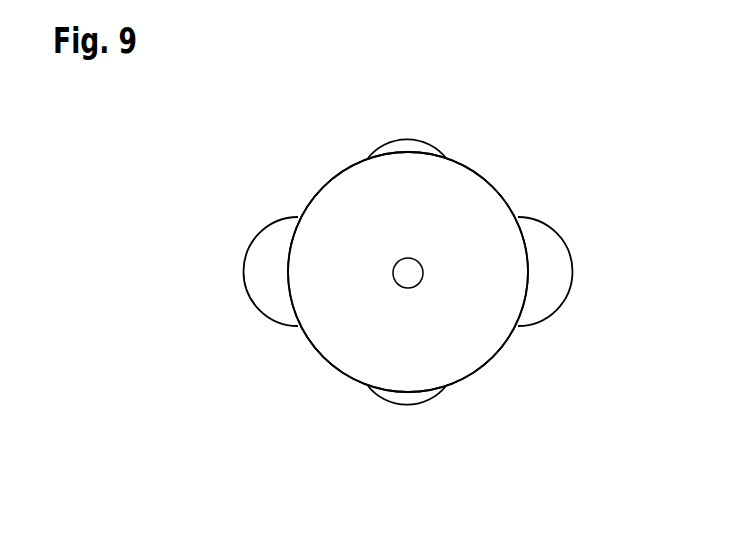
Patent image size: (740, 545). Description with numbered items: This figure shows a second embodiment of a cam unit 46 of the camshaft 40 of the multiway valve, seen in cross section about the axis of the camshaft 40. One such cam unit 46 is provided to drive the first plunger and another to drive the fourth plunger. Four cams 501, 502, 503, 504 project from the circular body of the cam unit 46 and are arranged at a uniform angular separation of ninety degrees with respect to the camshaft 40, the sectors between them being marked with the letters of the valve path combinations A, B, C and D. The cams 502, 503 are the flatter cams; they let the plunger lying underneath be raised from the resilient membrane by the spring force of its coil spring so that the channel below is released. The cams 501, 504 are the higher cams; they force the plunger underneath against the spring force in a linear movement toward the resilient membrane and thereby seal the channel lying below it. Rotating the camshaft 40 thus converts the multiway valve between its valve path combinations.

The cam unit 46 is at (304, 125).
The camshaft 40 is at (492, 351).
The cam 501 is at (563, 251).
The cam 502 is at (409, 147).
The cam 503 is at (405, 398).
The cam 504 is at (259, 252).